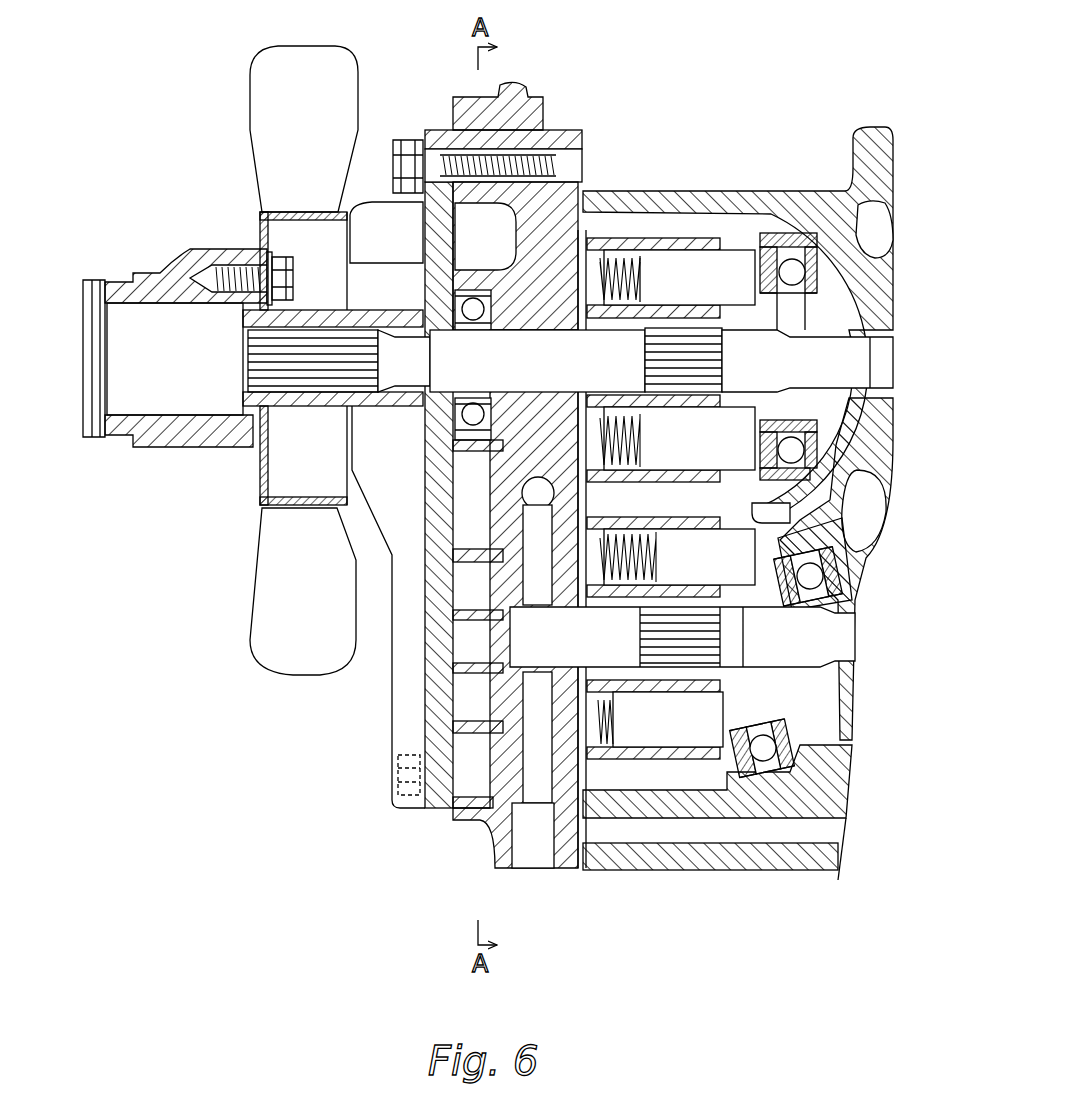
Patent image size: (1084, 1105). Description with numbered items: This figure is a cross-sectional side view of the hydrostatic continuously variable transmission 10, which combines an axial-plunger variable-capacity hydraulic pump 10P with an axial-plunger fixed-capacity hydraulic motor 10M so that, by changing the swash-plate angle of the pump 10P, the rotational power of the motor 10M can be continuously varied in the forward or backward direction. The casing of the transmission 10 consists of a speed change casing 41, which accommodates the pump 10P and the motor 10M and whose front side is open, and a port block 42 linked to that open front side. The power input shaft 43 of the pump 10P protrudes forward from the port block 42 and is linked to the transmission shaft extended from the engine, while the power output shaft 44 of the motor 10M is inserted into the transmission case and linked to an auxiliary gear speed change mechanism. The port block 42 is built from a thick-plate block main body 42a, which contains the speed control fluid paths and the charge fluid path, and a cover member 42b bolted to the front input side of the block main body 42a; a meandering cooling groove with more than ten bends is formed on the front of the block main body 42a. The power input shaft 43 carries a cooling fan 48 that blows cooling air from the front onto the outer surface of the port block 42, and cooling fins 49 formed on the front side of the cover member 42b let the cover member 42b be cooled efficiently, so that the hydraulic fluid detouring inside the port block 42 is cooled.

The hydrostatic continuously variable transmission 10 is at (768, 148).
The hydraulic pump 10P is at (662, 228).
The hydraulic motor 10M is at (633, 762).
The speed change casing 41 is at (748, 872).
The port block 42 is at (482, 510).
The block main body 42a is at (460, 816).
The cover member 42b is at (432, 812).
The power input shaft 43 is at (252, 360).
The power output shaft 44 is at (812, 640).
The cooling fan 48 is at (262, 102).
The cooling fins 49 is at (374, 212).